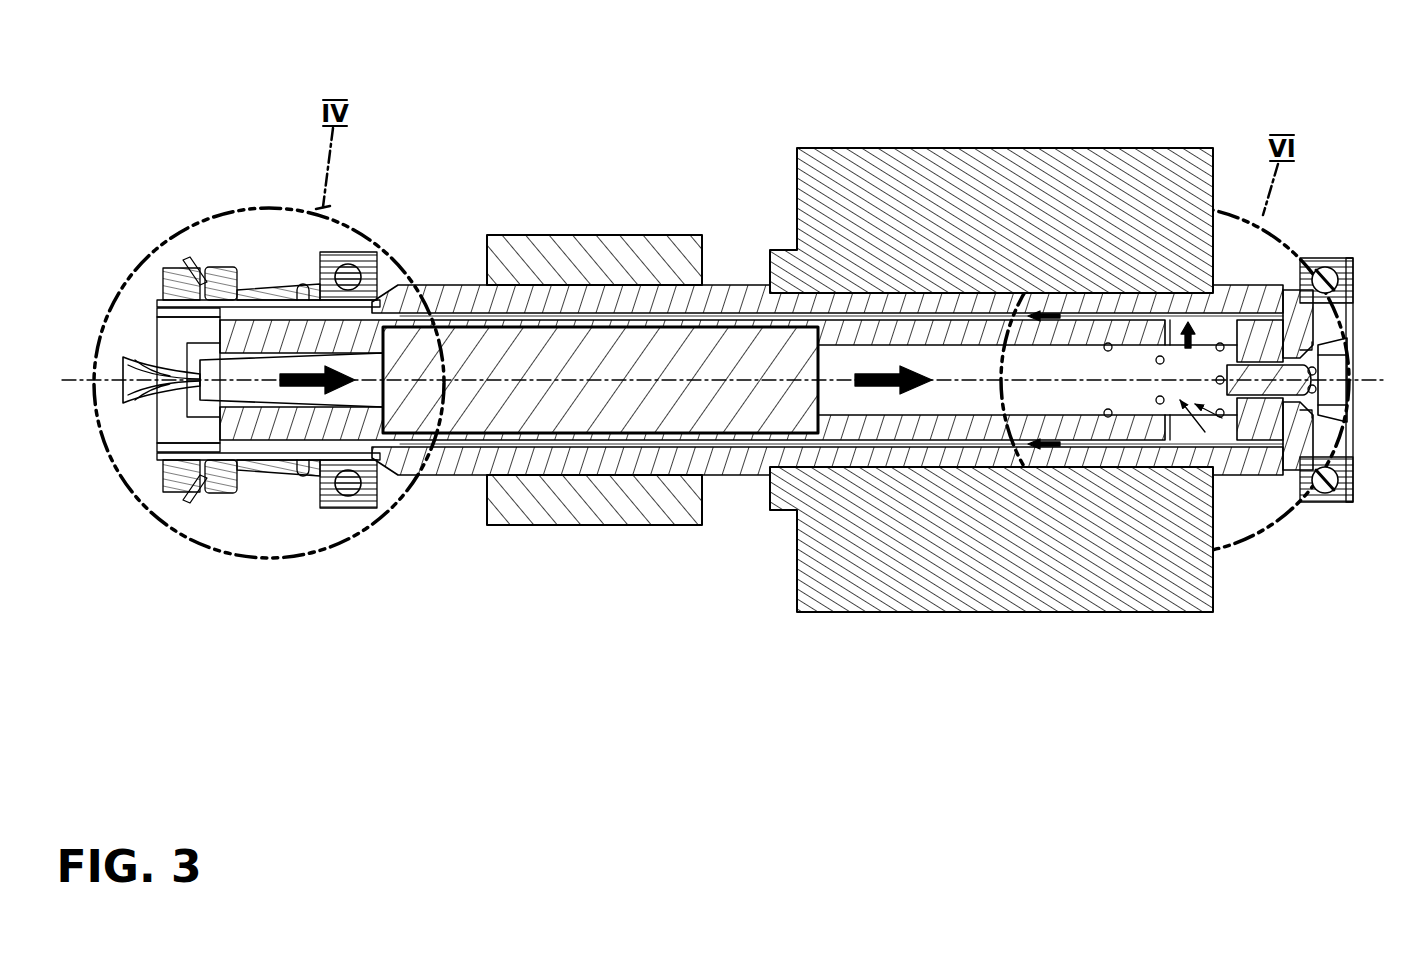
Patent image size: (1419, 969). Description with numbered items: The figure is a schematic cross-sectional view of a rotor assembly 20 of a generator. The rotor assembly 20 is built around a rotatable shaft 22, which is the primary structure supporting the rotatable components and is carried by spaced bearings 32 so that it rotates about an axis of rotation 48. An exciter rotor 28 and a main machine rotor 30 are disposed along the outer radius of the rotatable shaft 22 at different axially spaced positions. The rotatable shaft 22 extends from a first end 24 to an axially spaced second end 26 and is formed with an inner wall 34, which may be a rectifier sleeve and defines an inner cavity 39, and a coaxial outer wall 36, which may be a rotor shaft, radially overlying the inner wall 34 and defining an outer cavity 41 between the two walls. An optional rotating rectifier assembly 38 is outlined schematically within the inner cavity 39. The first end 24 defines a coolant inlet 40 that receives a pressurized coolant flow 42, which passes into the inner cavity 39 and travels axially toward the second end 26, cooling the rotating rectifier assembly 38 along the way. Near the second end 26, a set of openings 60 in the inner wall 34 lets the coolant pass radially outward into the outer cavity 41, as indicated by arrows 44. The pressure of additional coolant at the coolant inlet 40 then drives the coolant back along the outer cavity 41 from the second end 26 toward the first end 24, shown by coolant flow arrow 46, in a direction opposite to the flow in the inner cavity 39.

The rotor assembly 20 is at (474, 45).
The rotatable shaft 22 is at (450, 258).
The first end 24 is at (165, 218).
The second end 26 is at (1293, 218).
The exciter rotor 28 is at (570, 260).
The main machine rotor 30 is at (915, 195).
The bearings 32 is at (378, 257).
The inner wall 34 is at (830, 332).
The outer wall 36 is at (765, 298).
The rotating rectifier assembly 38 is at (718, 350).
The inner cavity 39 is at (254, 368).
The coolant inlet 40 is at (110, 393).
The outer cavity 41 is at (668, 318).
The coolant flow 42 is at (320, 392).
The radially outward flow arrows 44 is at (1195, 320).
The coolant flow arrow 46 is at (1040, 447).
The axis of rotation 48 is at (65, 378).
The openings 60 is at (1173, 402).